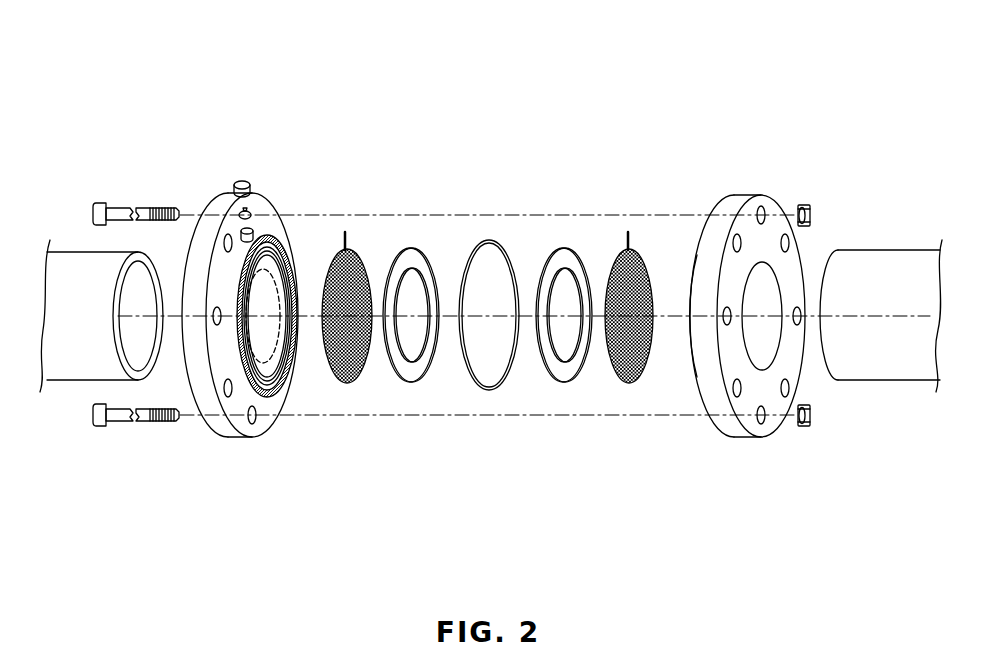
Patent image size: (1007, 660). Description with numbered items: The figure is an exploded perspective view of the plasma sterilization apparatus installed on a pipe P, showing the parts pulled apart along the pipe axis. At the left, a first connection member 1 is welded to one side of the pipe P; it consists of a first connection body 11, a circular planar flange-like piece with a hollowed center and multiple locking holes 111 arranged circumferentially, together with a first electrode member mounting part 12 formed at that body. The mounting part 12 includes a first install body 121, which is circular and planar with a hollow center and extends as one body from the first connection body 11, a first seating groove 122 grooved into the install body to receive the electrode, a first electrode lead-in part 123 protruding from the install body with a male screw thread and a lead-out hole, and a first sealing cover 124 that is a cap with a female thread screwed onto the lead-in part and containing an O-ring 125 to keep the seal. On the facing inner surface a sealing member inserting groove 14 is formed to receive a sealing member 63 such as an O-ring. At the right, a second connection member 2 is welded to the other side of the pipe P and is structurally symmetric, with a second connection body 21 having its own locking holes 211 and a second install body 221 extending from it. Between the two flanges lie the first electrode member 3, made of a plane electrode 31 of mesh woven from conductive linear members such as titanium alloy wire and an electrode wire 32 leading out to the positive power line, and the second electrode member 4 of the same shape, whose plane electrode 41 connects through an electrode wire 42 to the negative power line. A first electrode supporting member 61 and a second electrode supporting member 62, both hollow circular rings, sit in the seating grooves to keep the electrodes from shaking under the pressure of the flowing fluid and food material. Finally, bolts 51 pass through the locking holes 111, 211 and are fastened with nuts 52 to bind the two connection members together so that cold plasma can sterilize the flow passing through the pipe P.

The first connection member 1 is at (272, 68).
The first connection body 11 is at (191, 294).
The locking holes 111 is at (226, 396).
The first electrode member mounting part 12 is at (183, 113).
The first install body 121 is at (236, 190).
The first seating groove 122 is at (290, 252).
The first electrode lead-in part 123 is at (276, 253).
The first sealing cover 124 is at (245, 210).
The O-ring 125 is at (254, 229).
The sealing member inserting groove 14 is at (294, 398).
The second connection member 2 is at (755, 193).
The second connection body 21 is at (722, 422).
The locking holes 211 is at (748, 398).
The second install body 221 is at (690, 375).
The first electrode member 3 is at (418, 137).
The plane electrode 31 is at (351, 248).
The electrode wire 32 is at (347, 232).
The second electrode member 4 is at (701, 137).
The plane electrode 41 is at (638, 250).
The electrode wire 42 is at (630, 232).
The bolts 51 is at (120, 424).
The nuts 52 is at (794, 428).
The first electrode supporting member 61 is at (409, 382).
The second electrode supporting member 62 is at (564, 378).
The sealing member 63 is at (489, 390).
The pipe P is at (75, 382).